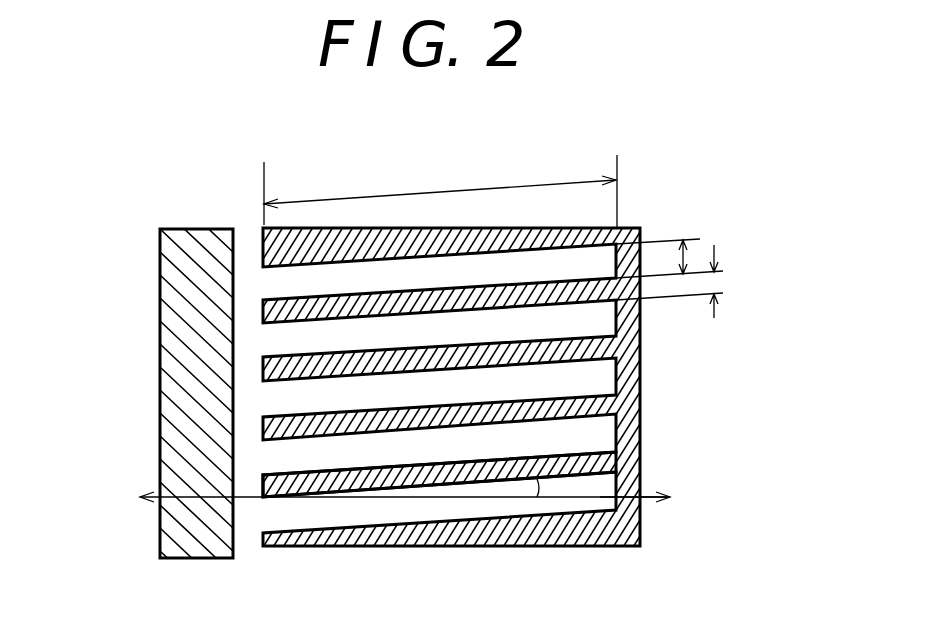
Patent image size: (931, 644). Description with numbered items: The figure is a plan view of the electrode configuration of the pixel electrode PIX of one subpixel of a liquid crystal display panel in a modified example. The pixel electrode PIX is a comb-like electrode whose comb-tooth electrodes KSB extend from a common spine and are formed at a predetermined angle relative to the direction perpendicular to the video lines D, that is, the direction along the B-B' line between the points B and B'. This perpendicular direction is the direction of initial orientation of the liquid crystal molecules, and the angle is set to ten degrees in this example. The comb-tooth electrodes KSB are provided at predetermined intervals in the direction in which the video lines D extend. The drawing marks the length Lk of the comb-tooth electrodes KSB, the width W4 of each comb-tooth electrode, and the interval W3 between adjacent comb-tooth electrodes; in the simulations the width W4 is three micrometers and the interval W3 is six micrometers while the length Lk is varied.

The pixel electrode PIX is at (632, 355).
The comb-tooth electrodes KSB is at (632, 462).
The video lines D is at (196, 250).
The length of the comb-tooth electrodes Lk is at (440, 191).
The interval of the comb-tooth electrodes W3 is at (687, 257).
The width of the comb-tooth electrodes W4 is at (720, 280).
The B-B' line B is at (390, 498).
The B-B' line B' is at (652, 498).